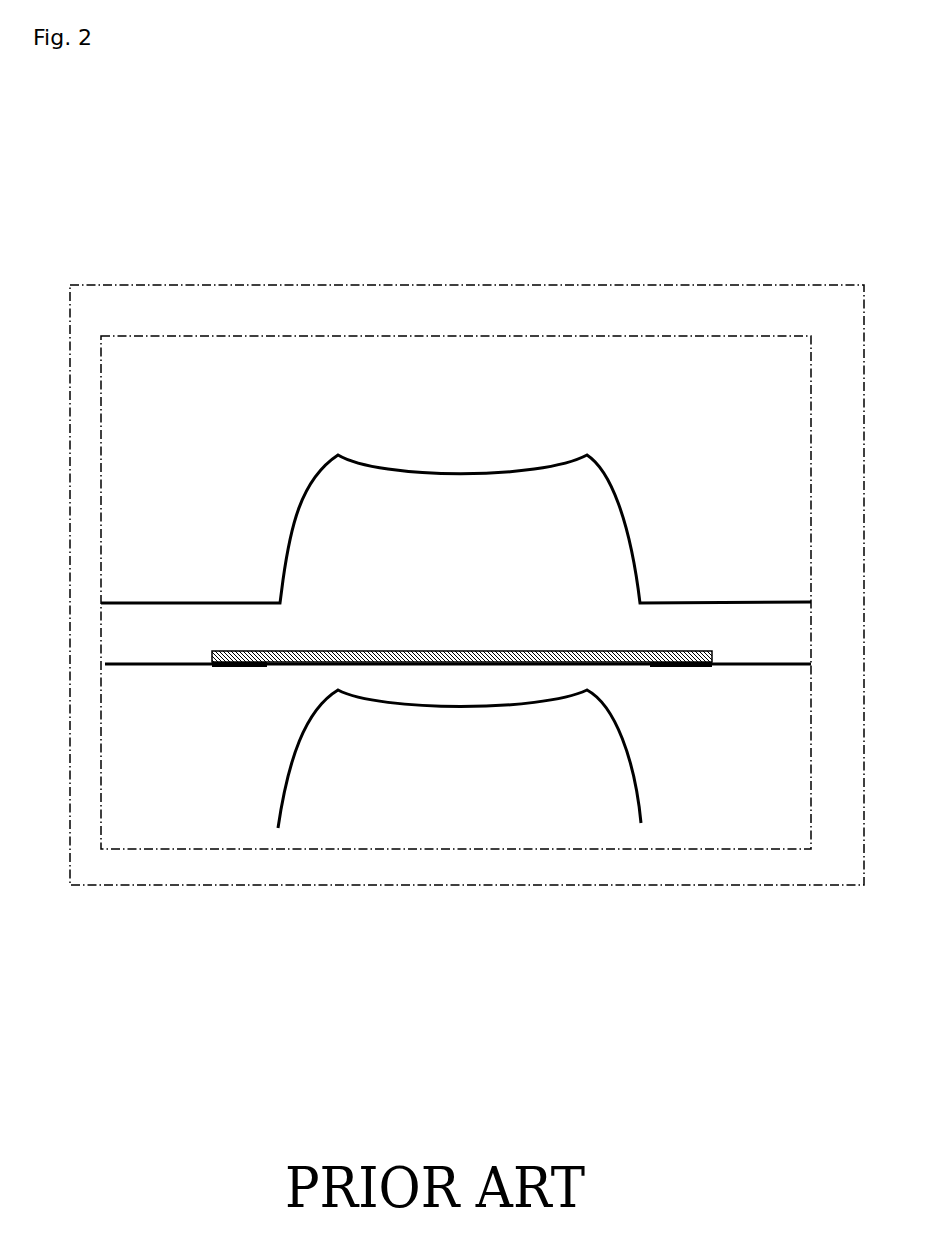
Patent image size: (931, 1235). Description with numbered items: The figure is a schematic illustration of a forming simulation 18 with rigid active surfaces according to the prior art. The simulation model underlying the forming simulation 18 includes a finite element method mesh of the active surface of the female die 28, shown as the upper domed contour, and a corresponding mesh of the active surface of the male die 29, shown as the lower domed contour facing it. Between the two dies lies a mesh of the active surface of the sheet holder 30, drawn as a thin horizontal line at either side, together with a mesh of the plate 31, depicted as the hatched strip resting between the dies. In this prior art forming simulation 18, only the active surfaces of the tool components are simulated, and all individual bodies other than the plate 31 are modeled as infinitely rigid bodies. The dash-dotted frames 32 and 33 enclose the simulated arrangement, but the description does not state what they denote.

The forming simulation 18 is at (139, 163).
The female die 28 is at (622, 507).
The male die 29 is at (632, 772).
The sheet holder 30 is at (197, 668).
The plate 31 is at (500, 650).
The outer housing 32 is at (183, 285).
The inner housing 33 is at (247, 336).